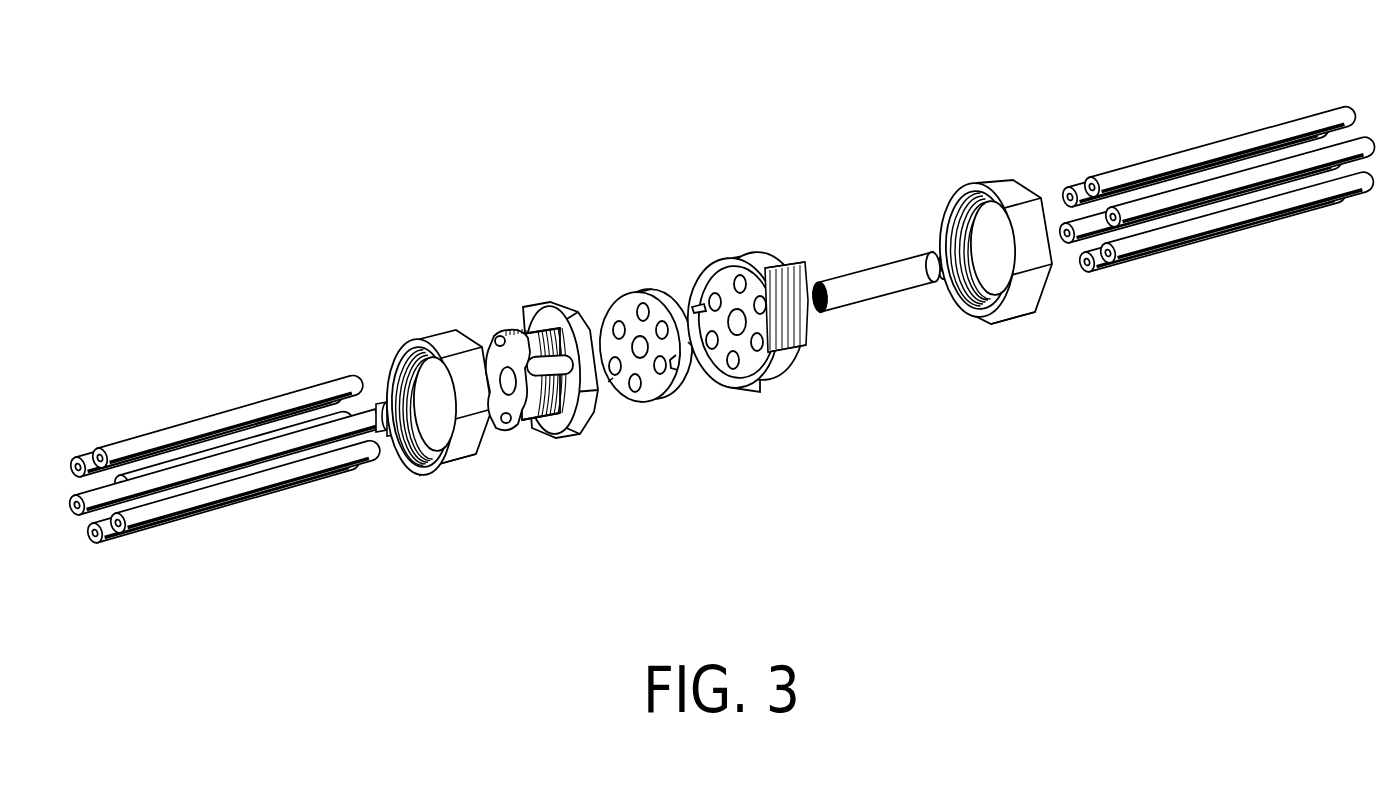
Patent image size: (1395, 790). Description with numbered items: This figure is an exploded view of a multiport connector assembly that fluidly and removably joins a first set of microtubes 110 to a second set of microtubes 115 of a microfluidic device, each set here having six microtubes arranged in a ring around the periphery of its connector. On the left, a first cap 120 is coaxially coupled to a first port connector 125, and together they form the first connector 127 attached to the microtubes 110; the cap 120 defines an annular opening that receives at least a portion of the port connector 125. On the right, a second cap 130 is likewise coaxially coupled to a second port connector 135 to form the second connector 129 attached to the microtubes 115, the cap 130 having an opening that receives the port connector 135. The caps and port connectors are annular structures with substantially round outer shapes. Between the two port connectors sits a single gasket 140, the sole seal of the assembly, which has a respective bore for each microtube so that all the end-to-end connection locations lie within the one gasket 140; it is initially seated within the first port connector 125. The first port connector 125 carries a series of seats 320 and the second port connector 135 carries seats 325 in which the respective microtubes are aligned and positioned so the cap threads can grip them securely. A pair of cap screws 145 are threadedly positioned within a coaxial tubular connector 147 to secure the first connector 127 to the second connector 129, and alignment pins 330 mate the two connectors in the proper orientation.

The first set of microtubes 110 is at (214, 388).
The second set of microtubes 115 is at (1217, 120).
The first cap 120 is at (412, 334).
The first port connector 125 is at (545, 306).
The first connector 127 is at (350, 243).
The second connector 129 is at (812, 148).
The second cap 130 is at (1005, 182).
The second port connector 135 is at (752, 262).
The gasket 140 is at (642, 296).
The cap screws 145 is at (398, 436).
The coaxial tubular connector 147 is at (895, 284).
The seats 320 is at (543, 426).
The seats 325 is at (800, 352).
The alignment pins 330 is at (688, 344).